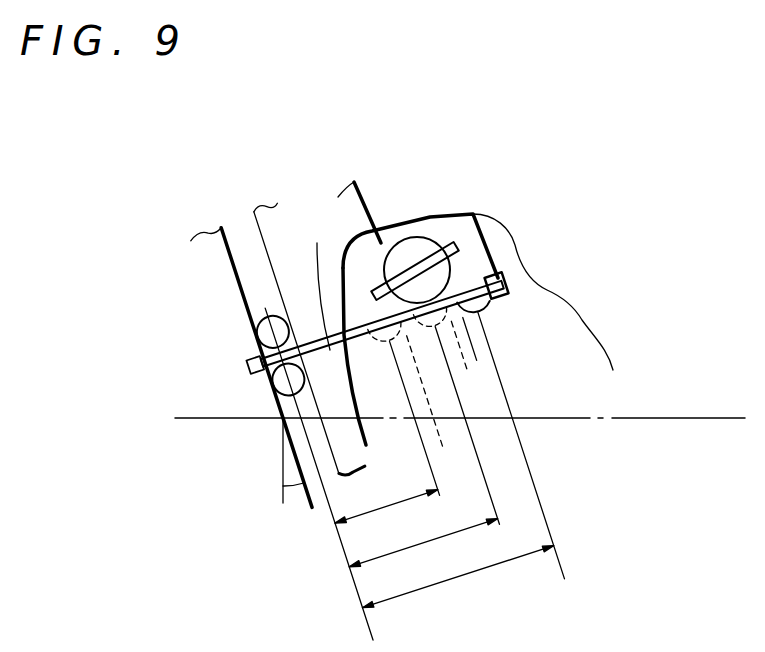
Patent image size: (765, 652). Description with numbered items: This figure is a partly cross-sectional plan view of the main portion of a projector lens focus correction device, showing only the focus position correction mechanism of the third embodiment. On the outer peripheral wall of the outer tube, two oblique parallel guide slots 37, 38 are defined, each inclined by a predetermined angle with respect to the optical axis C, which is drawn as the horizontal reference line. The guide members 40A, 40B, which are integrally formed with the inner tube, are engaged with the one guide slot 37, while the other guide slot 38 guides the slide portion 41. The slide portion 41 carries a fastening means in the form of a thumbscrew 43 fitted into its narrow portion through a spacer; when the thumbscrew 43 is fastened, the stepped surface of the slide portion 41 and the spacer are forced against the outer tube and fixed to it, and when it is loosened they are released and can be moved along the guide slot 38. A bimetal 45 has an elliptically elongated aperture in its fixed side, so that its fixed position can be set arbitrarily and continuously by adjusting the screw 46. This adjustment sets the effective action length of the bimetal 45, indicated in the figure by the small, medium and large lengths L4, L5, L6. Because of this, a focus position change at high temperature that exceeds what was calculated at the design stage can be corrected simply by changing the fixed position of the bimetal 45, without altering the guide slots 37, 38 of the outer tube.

The guide slot 37 is at (230, 212).
The guide slot 38 is at (389, 168).
The guide member 40A is at (260, 323).
The guide member 40B is at (273, 385).
The slide portion 41 is at (468, 214).
The thumbscrew 43 is at (427, 240).
The bimetal 45 is at (317, 243).
The screw 46 is at (489, 312).
The optical axis C is at (643, 418).
The effective action length L4 is at (410, 514).
The effective action length L5 is at (446, 551).
The effective action length L6 is at (463, 590).